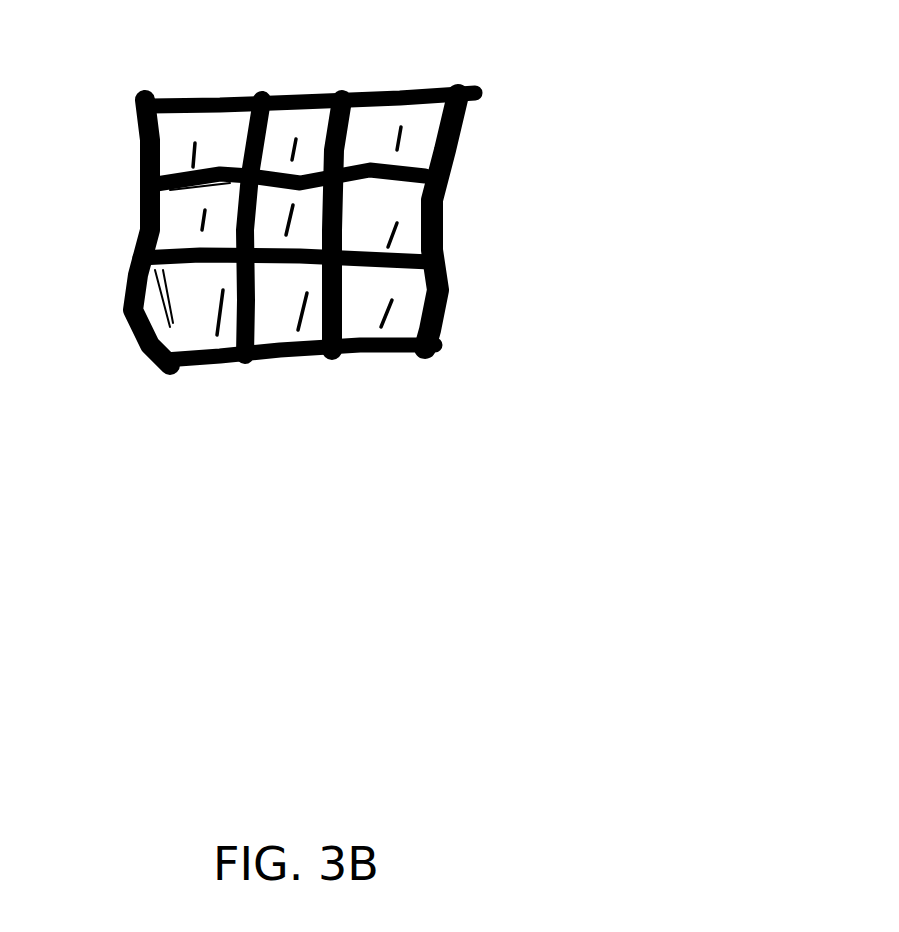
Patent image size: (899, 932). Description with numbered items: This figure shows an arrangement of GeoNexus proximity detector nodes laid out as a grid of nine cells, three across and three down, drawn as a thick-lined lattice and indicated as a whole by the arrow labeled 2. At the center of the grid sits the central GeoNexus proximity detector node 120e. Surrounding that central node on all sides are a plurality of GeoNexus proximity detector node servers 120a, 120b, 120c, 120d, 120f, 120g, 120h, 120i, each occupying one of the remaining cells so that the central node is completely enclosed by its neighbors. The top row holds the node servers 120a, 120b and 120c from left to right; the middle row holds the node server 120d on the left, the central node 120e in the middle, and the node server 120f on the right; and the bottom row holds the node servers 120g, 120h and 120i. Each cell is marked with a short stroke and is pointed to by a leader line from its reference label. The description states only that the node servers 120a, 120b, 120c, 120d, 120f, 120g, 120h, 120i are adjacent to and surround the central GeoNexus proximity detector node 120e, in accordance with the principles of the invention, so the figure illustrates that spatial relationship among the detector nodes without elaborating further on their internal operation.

The grid structure 2 is at (477, 229).
The GeoNexus proximity detector node server 120a is at (232, 122).
The GeoNexus proximity detector node server 120b is at (322, 120).
The GeoNexus proximity detector node server 120c is at (428, 122).
The GeoNexus proximity detector node server 120d is at (167, 252).
The central GeoNexus proximity detector node 120e is at (310, 208).
The GeoNexus proximity detector node server 120f is at (440, 240).
The GeoNexus proximity detector node server 120g is at (233, 353).
The GeoNexus proximity detector node server 120h is at (329, 356).
The GeoNexus proximity detector node server 120i is at (408, 335).